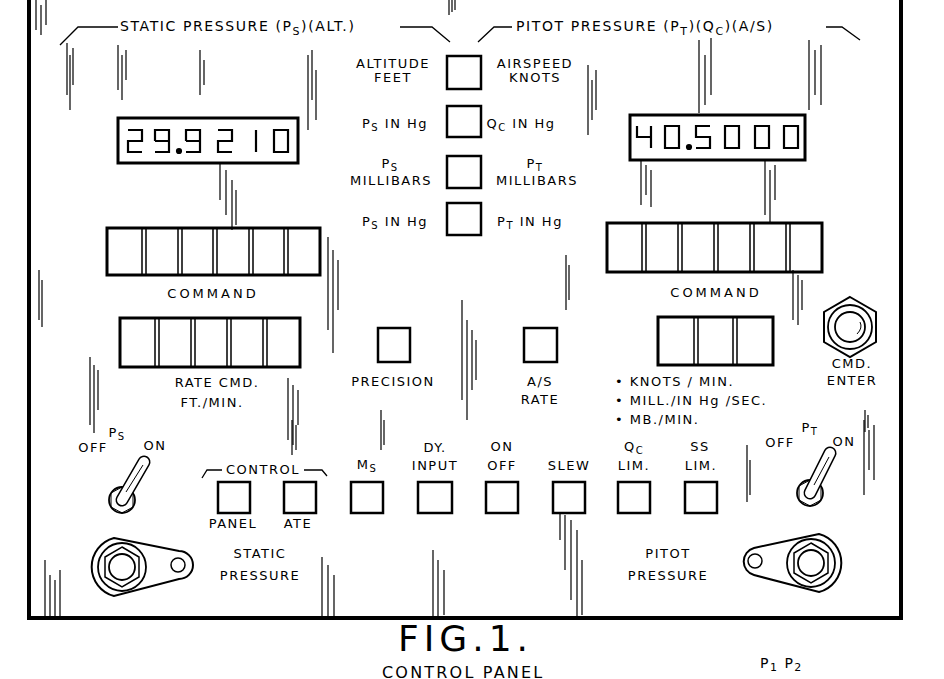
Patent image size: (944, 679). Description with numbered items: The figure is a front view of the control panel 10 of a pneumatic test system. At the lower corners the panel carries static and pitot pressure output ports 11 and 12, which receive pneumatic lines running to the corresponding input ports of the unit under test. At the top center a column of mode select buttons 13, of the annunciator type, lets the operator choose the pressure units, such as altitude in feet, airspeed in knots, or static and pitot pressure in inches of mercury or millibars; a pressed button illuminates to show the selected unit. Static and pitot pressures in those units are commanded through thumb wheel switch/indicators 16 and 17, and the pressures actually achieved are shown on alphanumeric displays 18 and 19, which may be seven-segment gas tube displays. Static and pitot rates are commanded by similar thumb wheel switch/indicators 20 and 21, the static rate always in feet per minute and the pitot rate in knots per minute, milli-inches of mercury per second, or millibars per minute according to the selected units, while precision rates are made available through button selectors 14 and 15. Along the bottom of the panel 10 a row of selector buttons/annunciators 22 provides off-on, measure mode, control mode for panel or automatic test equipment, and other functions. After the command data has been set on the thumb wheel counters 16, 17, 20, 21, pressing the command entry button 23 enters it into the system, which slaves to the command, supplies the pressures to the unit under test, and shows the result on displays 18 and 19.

The control panel 10 is at (183, 620).
The static pressure output port 11 is at (93, 567).
The pitot pressure output port 12 is at (841, 546).
The mode select buttons 13 is at (468, 239).
The precision rate button selector 14 is at (393, 328).
The precision rate button selector 15 is at (540, 328).
The static pressure thumb wheel switch/indicator 16 is at (108, 262).
The pitot pressure thumb wheel switch/indicator 17 is at (823, 240).
The static pressure alphanumeric display 18 is at (118, 141).
The pitot pressure alphanumeric display 19 is at (806, 137).
The static pressure rate thumb wheel switch/indicator 20 is at (120, 355).
The pitot pressure rate thumb wheel switch/indicator 21 is at (658, 340).
The selector buttons/annunciators 22 is at (532, 527).
The command entry button 23 is at (857, 297).